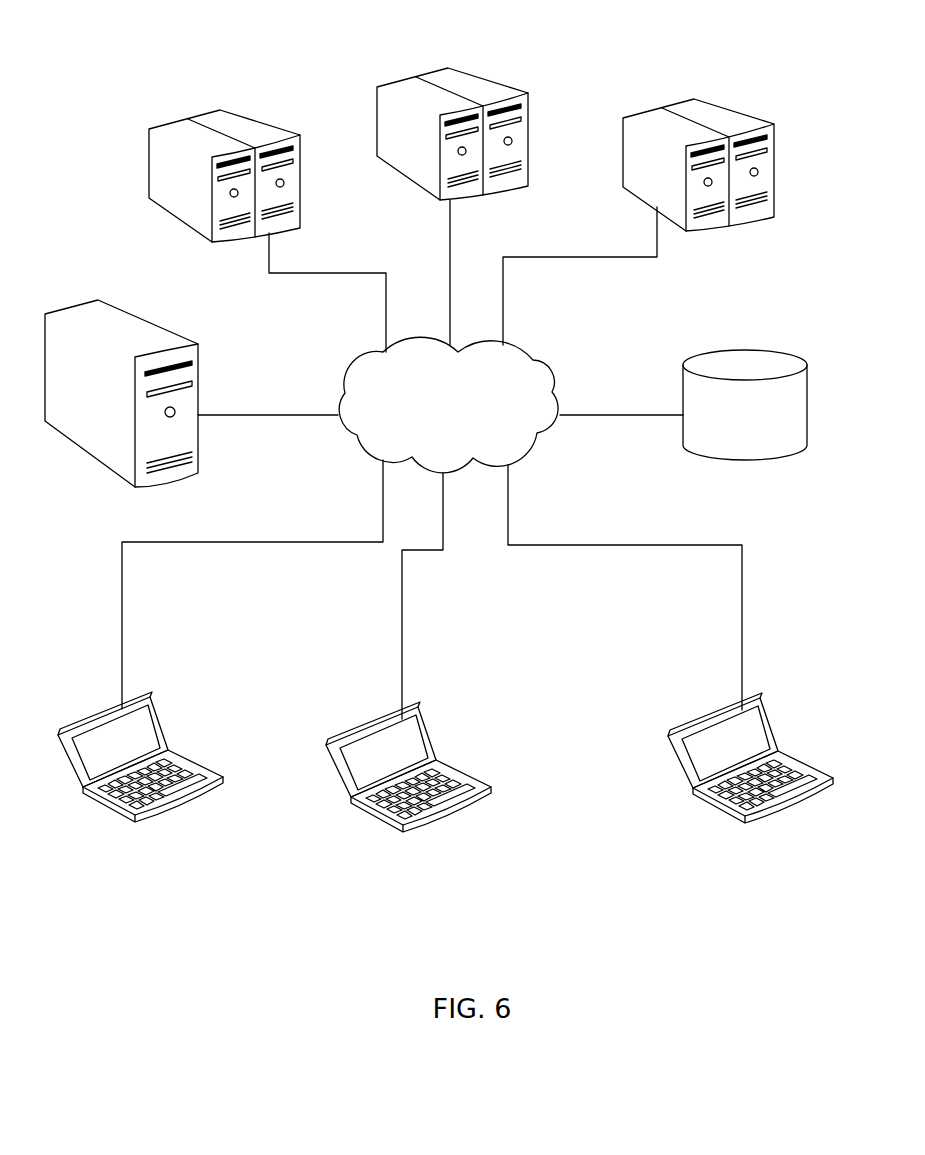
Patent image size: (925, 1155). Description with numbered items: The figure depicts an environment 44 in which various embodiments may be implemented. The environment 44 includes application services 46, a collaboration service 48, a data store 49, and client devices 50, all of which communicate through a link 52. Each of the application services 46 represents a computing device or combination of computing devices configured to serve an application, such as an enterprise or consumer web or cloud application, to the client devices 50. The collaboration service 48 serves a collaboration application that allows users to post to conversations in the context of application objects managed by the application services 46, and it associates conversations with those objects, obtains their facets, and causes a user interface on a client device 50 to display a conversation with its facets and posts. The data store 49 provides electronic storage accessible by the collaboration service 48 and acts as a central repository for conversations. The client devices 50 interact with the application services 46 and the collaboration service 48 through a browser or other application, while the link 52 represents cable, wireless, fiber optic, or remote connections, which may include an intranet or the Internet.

The environment 44 is at (112, 52).
The application services 46 is at (260, 137).
The collaboration service 48 is at (140, 322).
The data store 49 is at (770, 363).
The client devices 50 is at (148, 723).
The link 52 is at (543, 365).